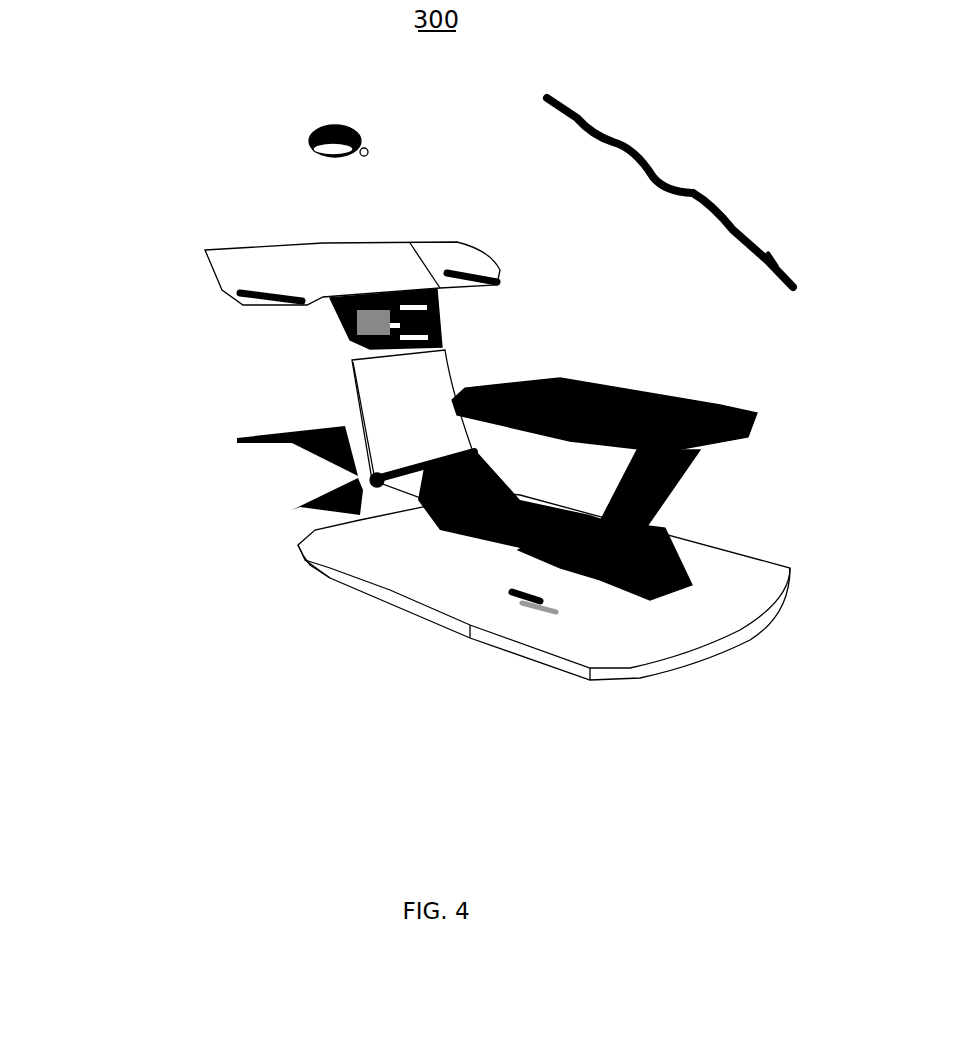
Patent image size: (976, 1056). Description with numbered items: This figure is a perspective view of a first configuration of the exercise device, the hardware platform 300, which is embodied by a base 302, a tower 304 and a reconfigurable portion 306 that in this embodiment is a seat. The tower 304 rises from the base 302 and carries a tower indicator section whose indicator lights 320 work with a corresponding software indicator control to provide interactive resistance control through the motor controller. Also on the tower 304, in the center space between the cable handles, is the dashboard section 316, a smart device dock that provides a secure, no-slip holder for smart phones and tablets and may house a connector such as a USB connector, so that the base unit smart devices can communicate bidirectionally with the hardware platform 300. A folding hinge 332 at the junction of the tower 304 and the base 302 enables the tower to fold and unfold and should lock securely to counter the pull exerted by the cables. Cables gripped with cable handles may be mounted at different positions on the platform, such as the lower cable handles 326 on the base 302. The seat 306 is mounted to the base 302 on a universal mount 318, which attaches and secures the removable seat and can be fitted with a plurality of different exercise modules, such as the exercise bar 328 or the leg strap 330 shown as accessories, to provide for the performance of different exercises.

The hardware platform 300 is at (459, 474).
The base 302 is at (595, 657).
The tower 304 is at (238, 387).
The seat 306 is at (845, 395).
The dashboard section 316 is at (22, 257).
The universal mount 318 is at (805, 540).
The indicator lights 320 is at (591, 307).
The lower cable handles 326 is at (302, 580).
The exercise bar 328 is at (413, 166).
The leg strap 330 is at (98, 142).
The folding hinge 332 is at (120, 459).